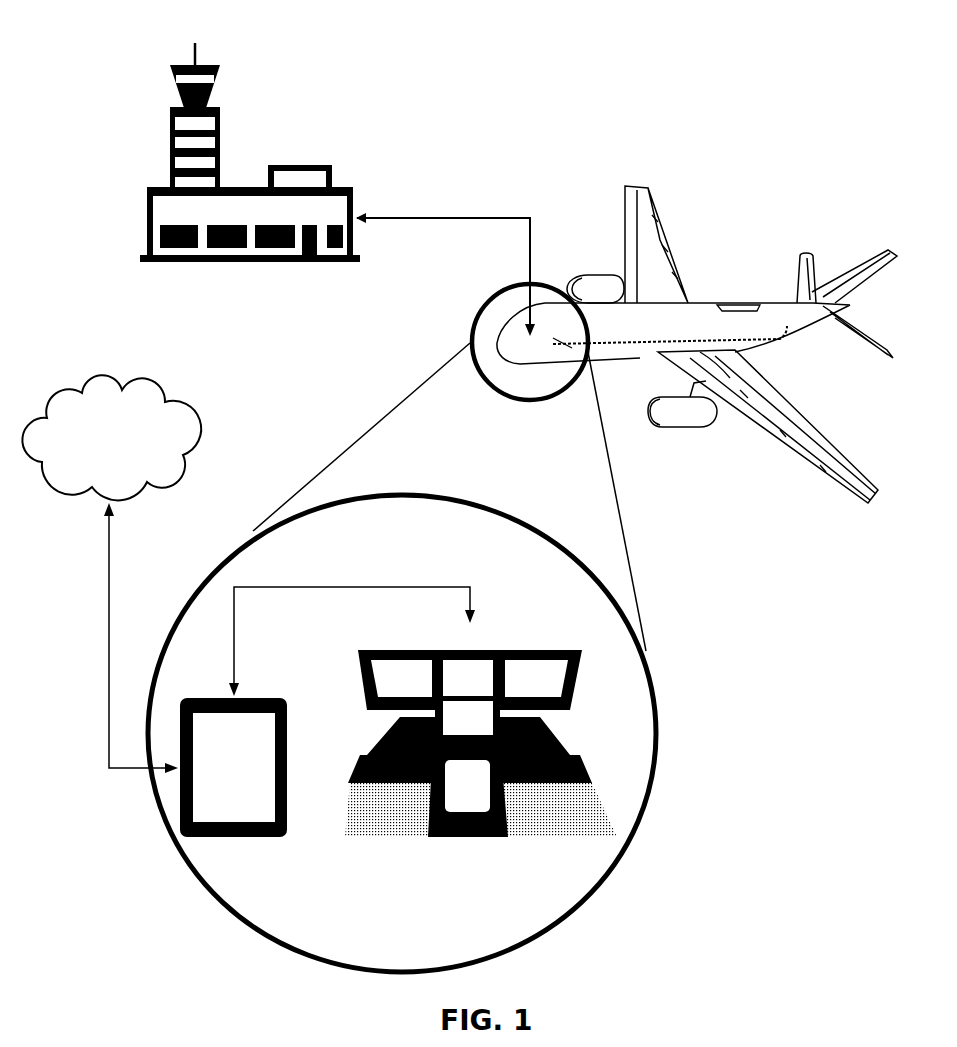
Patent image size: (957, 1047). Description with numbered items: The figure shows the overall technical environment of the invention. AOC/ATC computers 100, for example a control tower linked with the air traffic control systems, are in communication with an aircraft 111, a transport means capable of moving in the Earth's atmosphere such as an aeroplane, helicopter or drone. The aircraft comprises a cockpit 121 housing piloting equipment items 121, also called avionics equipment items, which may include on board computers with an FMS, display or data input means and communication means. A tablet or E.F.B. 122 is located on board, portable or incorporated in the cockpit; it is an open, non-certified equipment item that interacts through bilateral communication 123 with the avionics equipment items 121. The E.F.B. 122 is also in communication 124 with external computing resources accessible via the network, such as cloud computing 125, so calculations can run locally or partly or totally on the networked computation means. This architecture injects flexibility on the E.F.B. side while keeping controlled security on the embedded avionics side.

The AOC/ATC computers 100 is at (231, 61).
The aircraft 111 is at (665, 193).
The cockpit / avionics equipment items 121 is at (486, 302).
The E.F.B. (Electronic Flight Bag) 122 is at (258, 684).
The bilateral communication 123 is at (345, 583).
The communication 124 is at (113, 631).
The cloud computing 125 is at (135, 375).